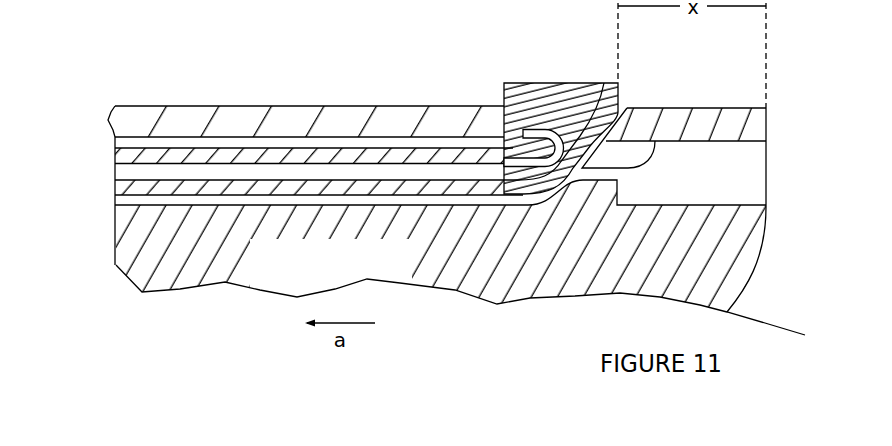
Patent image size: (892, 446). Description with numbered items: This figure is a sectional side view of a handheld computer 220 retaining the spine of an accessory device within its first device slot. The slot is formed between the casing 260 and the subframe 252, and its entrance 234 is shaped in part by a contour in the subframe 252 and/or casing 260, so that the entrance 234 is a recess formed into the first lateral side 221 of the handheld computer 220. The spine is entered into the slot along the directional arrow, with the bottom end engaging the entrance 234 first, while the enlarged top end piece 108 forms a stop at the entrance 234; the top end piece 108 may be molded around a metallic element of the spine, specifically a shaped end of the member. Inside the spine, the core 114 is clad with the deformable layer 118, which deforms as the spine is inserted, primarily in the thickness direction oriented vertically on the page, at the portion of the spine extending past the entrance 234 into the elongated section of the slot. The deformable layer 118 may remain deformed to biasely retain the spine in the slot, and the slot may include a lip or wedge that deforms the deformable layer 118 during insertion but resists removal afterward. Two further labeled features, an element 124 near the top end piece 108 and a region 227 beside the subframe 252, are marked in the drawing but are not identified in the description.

The top end piece 108 is at (540, 97).
The core 114 is at (140, 170).
The deformable layer 118 is at (123, 185).
The hook 124 is at (612, 82).
The handheld computer 220 is at (782, 157).
The first lateral side 221 is at (232, 105).
The cavity 227 is at (770, 187).
The entrance 234 is at (613, 97).
The subframe 252 is at (197, 278).
The casing 260 is at (332, 123).